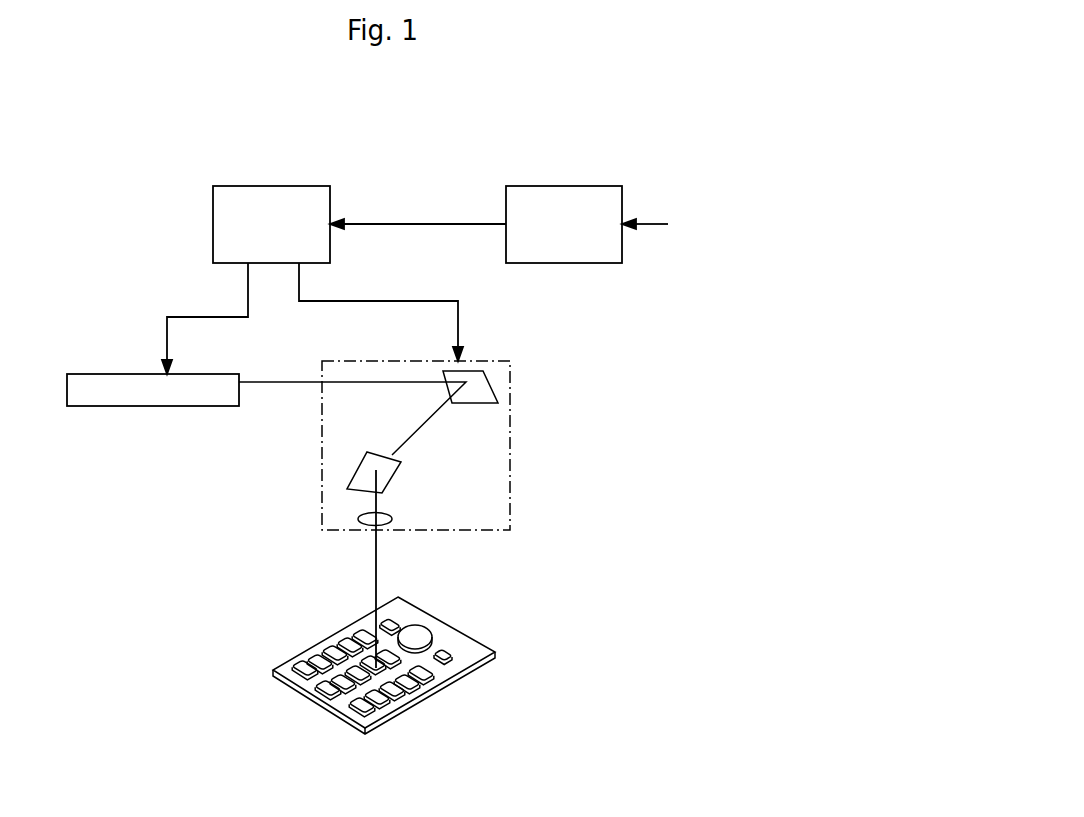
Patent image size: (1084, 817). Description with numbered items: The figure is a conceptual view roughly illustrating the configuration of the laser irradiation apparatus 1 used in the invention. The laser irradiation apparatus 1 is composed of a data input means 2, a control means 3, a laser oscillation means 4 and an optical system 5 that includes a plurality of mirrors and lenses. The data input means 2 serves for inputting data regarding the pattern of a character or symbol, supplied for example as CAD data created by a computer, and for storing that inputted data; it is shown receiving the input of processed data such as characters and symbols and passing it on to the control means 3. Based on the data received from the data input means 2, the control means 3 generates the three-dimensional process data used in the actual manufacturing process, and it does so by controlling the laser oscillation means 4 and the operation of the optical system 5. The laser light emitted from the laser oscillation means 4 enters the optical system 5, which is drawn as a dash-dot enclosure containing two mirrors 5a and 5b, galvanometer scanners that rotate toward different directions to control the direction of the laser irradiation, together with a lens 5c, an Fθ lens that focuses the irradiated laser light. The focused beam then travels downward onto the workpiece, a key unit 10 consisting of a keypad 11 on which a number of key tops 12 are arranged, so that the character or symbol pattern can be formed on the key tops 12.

The laser irradiation apparatus 1 is at (447, 200).
The data input means 2 is at (580, 194).
The control means 3 is at (272, 196).
The laser oscillation means 4 is at (226, 405).
The optical system 5 is at (510, 496).
The mirror (galvanometer scanner) 5a is at (482, 387).
The mirror (galvanometer scanner) 5b is at (383, 470).
The lens (Fθ lens) 5c is at (360, 525).
The key unit 10 is at (436, 669).
The keypad 11 is at (473, 660).
The key top 12 is at (330, 651).